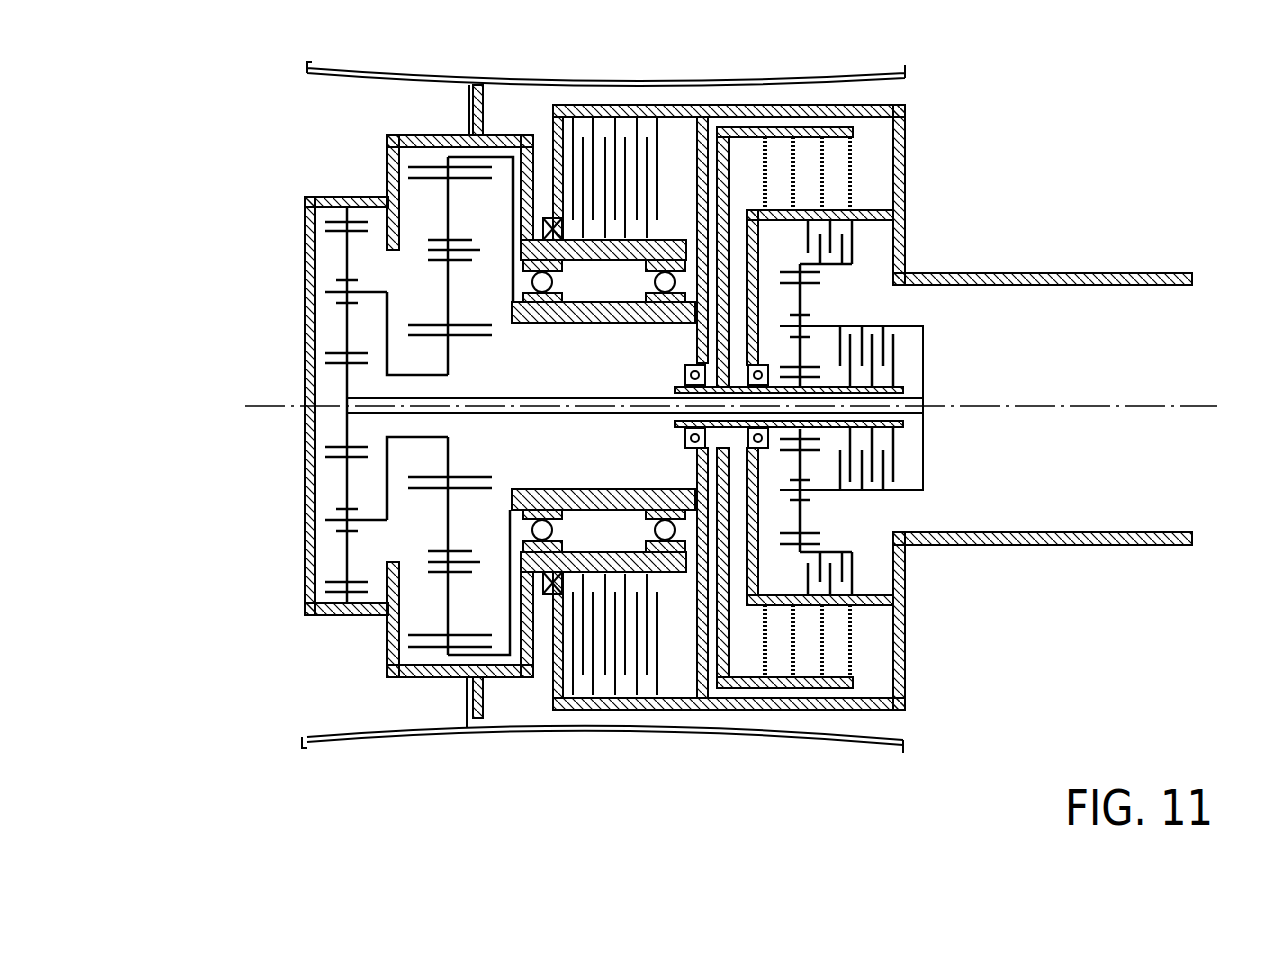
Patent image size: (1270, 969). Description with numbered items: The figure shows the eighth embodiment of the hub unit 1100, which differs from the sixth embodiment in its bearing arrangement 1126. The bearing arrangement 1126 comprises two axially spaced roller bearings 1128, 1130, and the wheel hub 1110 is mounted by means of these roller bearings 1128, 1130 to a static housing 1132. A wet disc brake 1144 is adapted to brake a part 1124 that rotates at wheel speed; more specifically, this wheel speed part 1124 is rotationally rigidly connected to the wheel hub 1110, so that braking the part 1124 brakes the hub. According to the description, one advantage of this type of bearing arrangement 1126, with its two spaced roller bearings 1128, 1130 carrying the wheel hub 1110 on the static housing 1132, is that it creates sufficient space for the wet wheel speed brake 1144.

The hub unit 1100 is at (838, 778).
The wheel hub 1110 is at (428, 677).
The wheel speed part 1124 is at (657, 238).
The bearing arrangement 1126 is at (670, 598).
The roller bearing 1128 is at (532, 531).
The roller bearing 1130 is at (645, 535).
The static housing 1132 is at (580, 494).
The wet disc brake 1144 is at (610, 82).